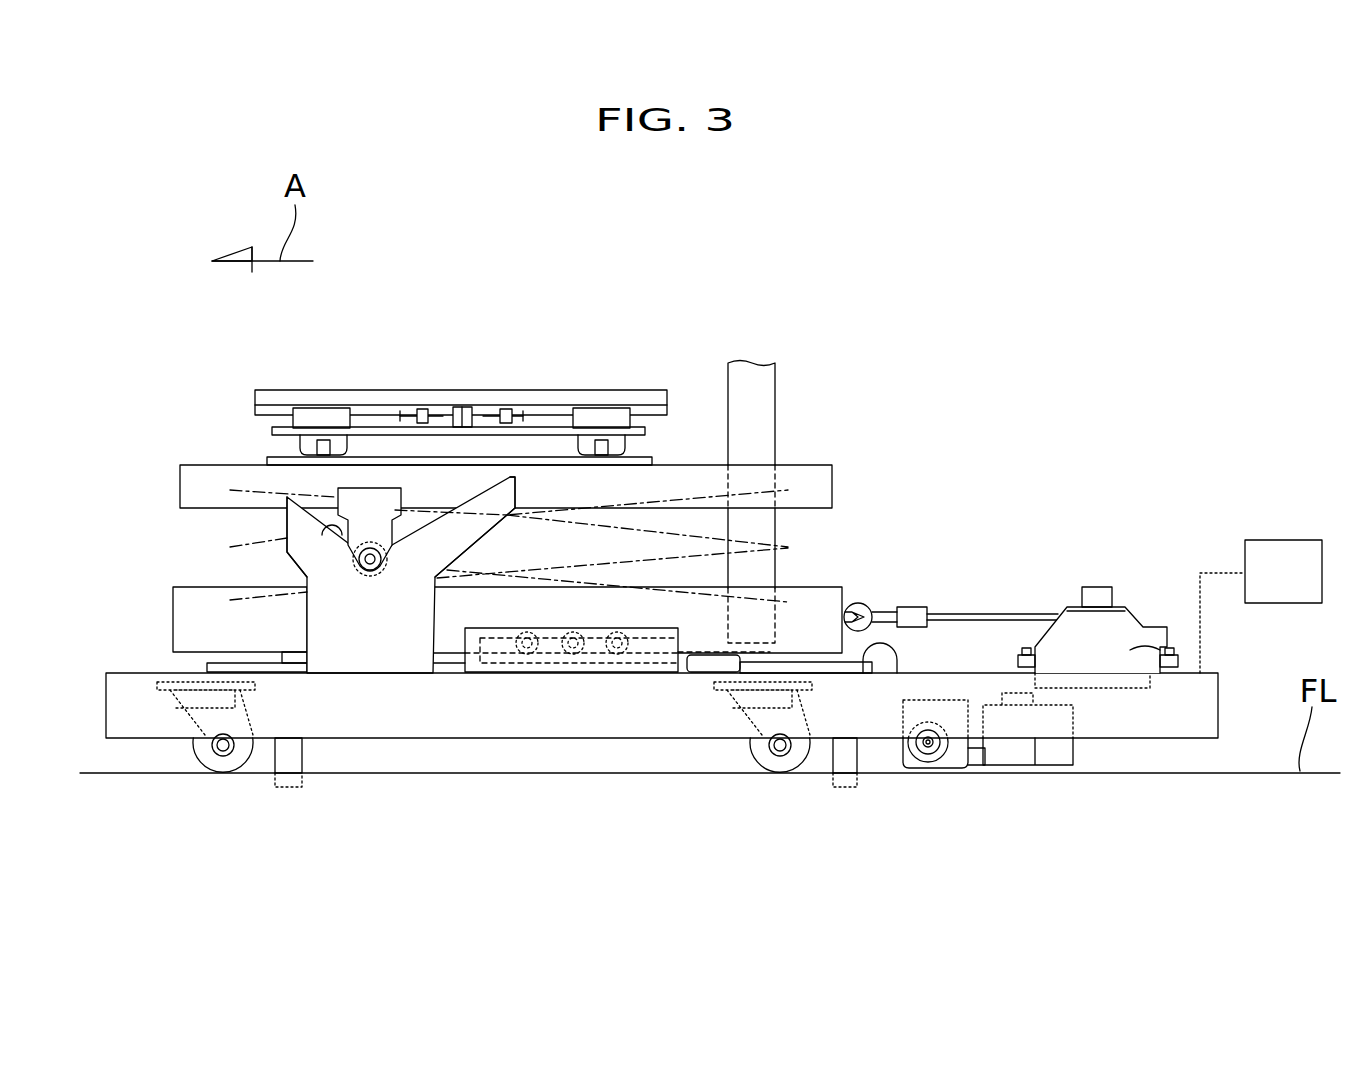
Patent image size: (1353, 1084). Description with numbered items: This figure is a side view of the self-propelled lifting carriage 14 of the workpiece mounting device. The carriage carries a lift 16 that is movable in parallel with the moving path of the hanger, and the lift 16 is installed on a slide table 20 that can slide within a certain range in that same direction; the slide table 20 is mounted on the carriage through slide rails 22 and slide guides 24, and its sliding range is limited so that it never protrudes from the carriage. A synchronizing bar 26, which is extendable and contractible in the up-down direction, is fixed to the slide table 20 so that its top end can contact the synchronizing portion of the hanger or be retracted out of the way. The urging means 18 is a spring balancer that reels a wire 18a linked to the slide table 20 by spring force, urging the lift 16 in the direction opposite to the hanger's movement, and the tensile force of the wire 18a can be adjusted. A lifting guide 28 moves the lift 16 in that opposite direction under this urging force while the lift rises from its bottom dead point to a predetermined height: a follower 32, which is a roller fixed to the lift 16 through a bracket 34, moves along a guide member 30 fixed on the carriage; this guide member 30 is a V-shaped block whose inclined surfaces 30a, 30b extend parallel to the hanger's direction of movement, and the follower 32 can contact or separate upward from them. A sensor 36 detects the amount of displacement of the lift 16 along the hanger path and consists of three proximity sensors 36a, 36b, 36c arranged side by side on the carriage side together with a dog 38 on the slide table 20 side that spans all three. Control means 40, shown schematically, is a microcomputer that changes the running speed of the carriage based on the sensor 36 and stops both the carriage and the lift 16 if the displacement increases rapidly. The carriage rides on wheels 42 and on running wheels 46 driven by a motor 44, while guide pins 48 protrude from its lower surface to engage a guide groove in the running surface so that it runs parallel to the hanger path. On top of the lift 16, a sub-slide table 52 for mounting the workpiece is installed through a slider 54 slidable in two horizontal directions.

The self-propelled lifting carriage 14 is at (135, 690).
The lift 16 is at (820, 483).
The urging means 18 is at (1117, 630).
The wire 18a is at (1003, 613).
The slide table 20 is at (820, 596).
The slide rails 22 is at (897, 673).
The slide guides 24 is at (707, 665).
The synchronizing bar 26 is at (765, 382).
The lifting guide 28 is at (279, 527).
The guide member 30 is at (335, 676).
The inclined surface 30a is at (491, 490).
The inclined surface 30b is at (338, 534).
The follower 32 is at (370, 555).
The bracket 34 is at (372, 488).
The sensor 36 is at (578, 773).
The proximity sensor 36a is at (527, 654).
The proximity sensor 36b is at (573, 654).
The proximity sensor 36c is at (617, 654).
The dog 38 is at (497, 645).
The control means 40 is at (1263, 589).
The wheels 42 is at (222, 785).
The motor 44 is at (1057, 768).
The running wheels 46 is at (933, 754).
The guide pins 48 is at (283, 788).
The sub-slide table 52 is at (505, 390).
The slider 54 is at (244, 422).